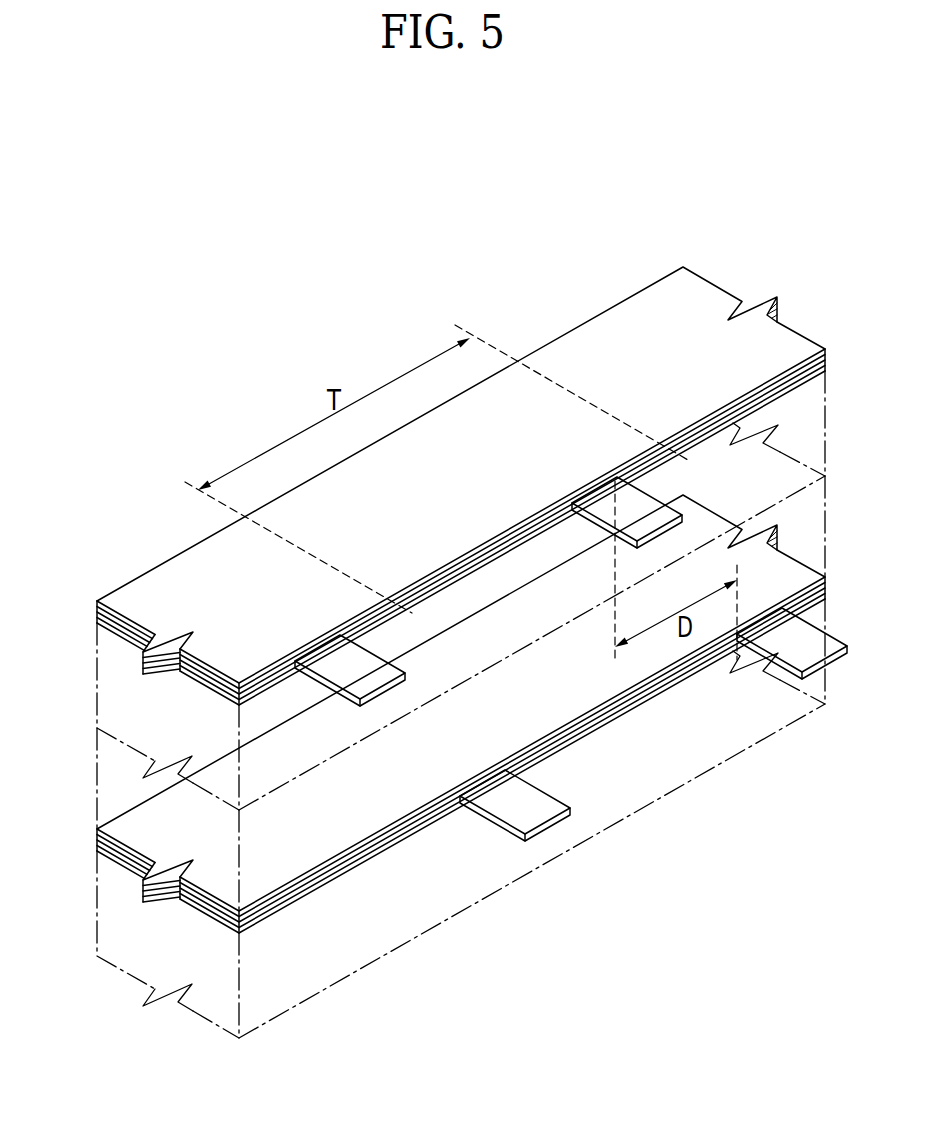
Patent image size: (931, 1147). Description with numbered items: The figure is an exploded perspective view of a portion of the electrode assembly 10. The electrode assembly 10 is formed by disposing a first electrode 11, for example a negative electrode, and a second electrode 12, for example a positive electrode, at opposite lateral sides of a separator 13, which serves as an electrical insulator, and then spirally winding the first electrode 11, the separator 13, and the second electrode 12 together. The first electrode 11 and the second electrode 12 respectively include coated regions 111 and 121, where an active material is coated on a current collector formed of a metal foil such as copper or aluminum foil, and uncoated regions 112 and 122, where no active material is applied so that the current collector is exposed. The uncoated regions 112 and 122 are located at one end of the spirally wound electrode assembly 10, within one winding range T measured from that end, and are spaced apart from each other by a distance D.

The electrode assembly 10 is at (377, 297).
The first electrode 11 is at (110, 868).
The coated region 111 is at (330, 825).
The uncoated region 112 is at (532, 808).
The second electrode 12 is at (110, 640).
The coated region 121 is at (167, 583).
The uncoated region 122 is at (372, 665).
The separator 13 is at (273, 793).